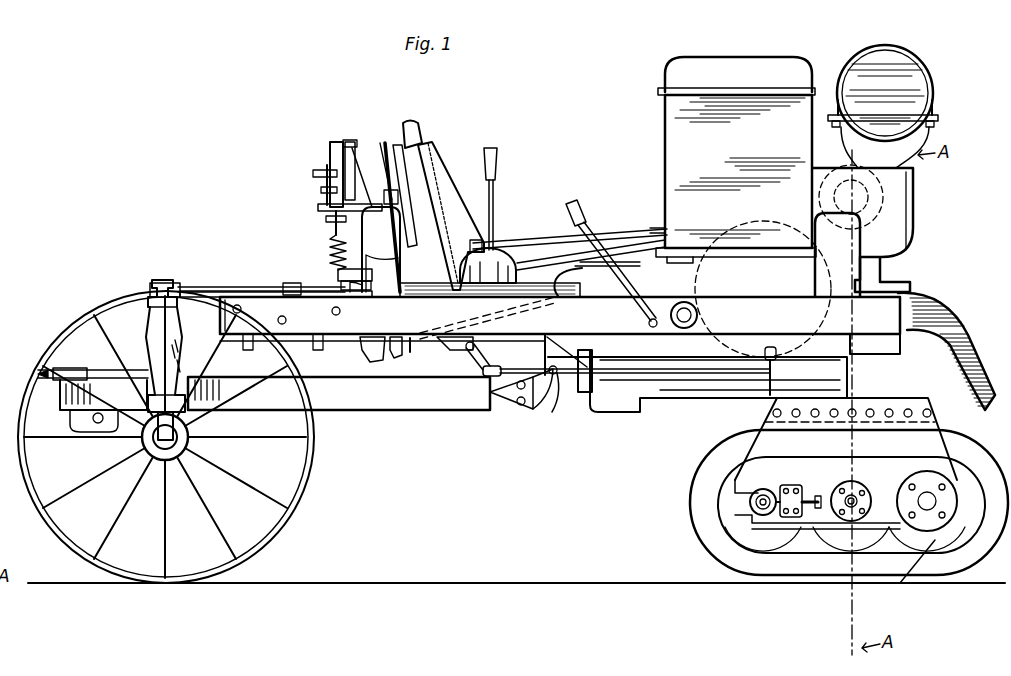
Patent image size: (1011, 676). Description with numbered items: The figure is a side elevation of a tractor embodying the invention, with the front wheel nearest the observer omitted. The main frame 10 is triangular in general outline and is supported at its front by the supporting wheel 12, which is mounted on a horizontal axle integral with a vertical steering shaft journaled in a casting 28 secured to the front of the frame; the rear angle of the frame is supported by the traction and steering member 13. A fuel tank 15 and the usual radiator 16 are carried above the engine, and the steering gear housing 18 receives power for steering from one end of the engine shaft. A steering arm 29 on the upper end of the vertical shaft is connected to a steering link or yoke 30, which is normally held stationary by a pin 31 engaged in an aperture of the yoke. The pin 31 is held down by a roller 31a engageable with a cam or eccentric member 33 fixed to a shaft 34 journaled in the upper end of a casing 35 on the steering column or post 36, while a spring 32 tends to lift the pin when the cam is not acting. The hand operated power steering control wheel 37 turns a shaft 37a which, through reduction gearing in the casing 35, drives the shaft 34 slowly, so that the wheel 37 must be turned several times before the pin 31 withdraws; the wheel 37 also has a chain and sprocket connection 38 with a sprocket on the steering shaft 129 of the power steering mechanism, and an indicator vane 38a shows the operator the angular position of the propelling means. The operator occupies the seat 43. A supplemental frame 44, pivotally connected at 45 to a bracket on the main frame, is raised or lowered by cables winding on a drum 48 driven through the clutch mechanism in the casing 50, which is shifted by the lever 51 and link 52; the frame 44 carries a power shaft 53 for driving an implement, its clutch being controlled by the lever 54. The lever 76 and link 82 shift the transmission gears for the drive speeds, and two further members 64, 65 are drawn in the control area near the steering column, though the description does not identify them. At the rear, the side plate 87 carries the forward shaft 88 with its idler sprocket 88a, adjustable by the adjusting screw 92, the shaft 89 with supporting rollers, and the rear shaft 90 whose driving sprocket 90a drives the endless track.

The main frame 10 is at (262, 305).
The supporting wheel 12 is at (290, 527).
The traction and steering member 13 is at (915, 210).
The fuel tank 15 is at (908, 80).
The radiator 16 is at (752, 60).
The steering gear housing 18 is at (824, 258).
The casting 28 is at (162, 330).
The steering arm 29 is at (190, 288).
The steering link or yoke 30 is at (312, 289).
The pin 31 is at (334, 232).
The roller 31a is at (322, 206).
The spring 32 is at (340, 262).
The cam or eccentric member 33 is at (322, 170).
The shaft 34 is at (318, 188).
The casing 35 is at (336, 143).
The steering column or post 36 is at (385, 270).
The hand operated power steering control wheel 37 is at (410, 125).
The shaft 37a is at (381, 146).
The chain and sprocket connection 38 is at (382, 205).
The indicator vane 38a is at (355, 148).
The seat 43 is at (560, 270).
The supplemental frame 44 is at (348, 398).
The pivotal connection 45 is at (553, 395).
The drum 48 is at (699, 314).
The casing 50 is at (718, 398).
The lever 51 is at (404, 218).
The link 52 is at (523, 368).
The power shaft 53 is at (100, 370).
The lever 54 is at (589, 220).
The rod 64 is at (518, 243).
The lever 65 is at (440, 162).
The lever 76 is at (494, 150).
The link 82 is at (625, 247).
The side plate 87 is at (932, 452).
The forward shaft 88 is at (766, 492).
The idler sprocket 88a is at (715, 495).
The shaft 89 is at (866, 494).
The rear shaft 90 is at (940, 500).
The driving sprocket 90a is at (917, 580).
The adjusting screw 92 is at (805, 496).
The steering shaft 129 is at (388, 344).